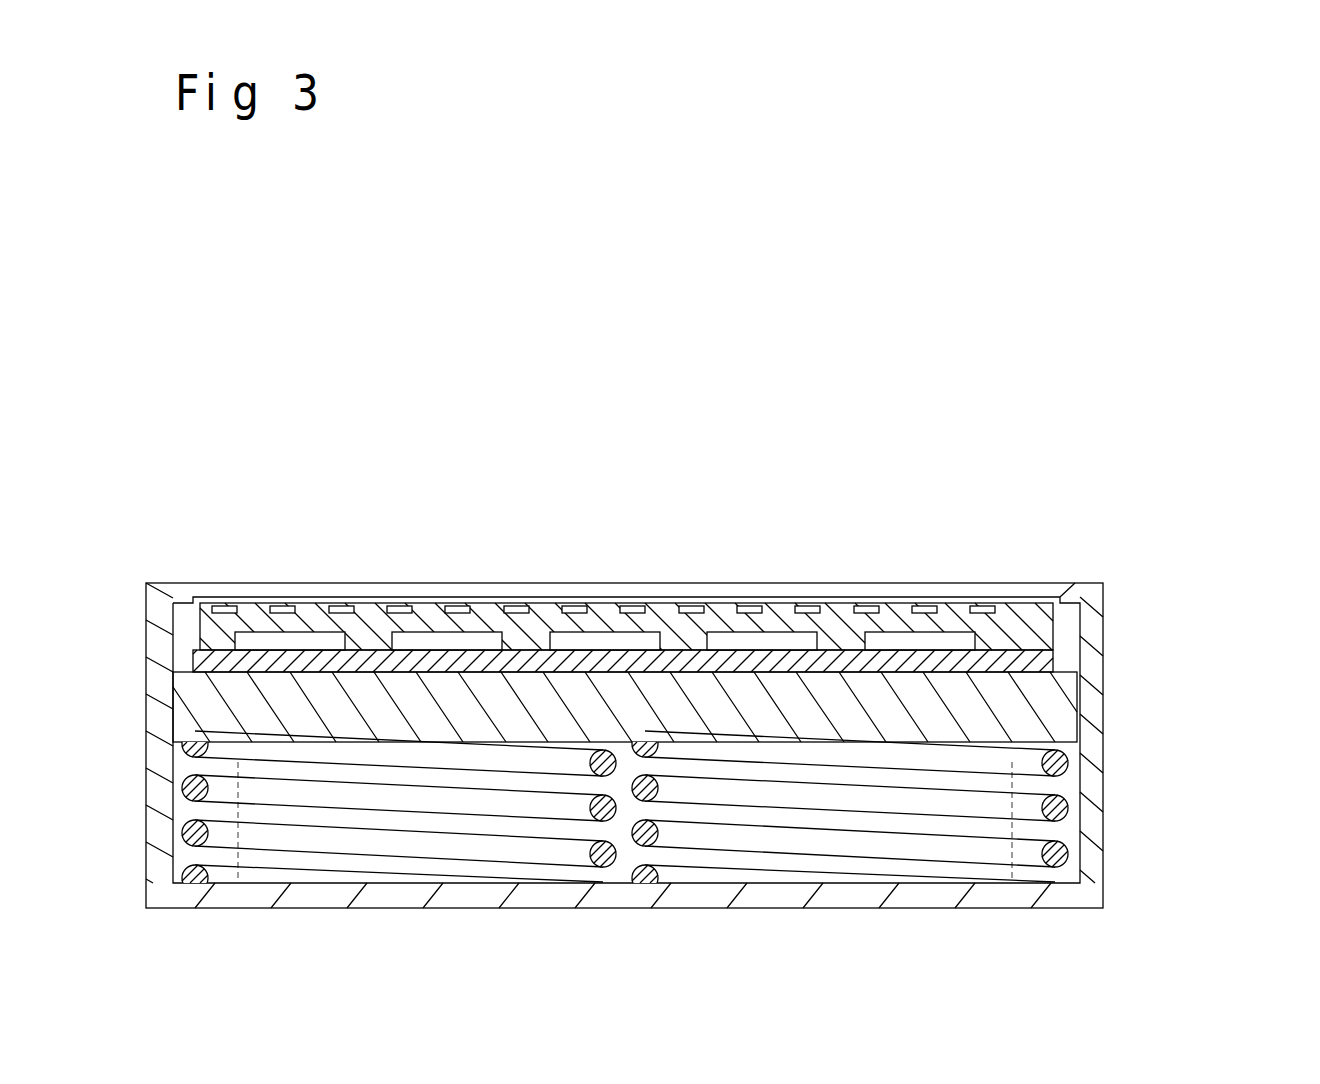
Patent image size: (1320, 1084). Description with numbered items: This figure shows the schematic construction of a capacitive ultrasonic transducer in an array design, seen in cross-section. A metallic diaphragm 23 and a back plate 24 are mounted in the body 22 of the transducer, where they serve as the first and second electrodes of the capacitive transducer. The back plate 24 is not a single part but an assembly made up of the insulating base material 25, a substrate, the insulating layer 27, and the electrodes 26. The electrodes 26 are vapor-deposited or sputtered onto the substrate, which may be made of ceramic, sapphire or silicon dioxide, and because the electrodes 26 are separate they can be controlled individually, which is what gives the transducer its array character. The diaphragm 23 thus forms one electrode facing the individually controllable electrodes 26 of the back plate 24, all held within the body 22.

The body 22 is at (1098, 698).
The metallic diaphragm 23 is at (485, 603).
The back plate 24 is at (577, 648).
The insulating base material 25 is at (678, 650).
The electrodes 26 is at (945, 633).
The insulating layer 27 is at (367, 627).